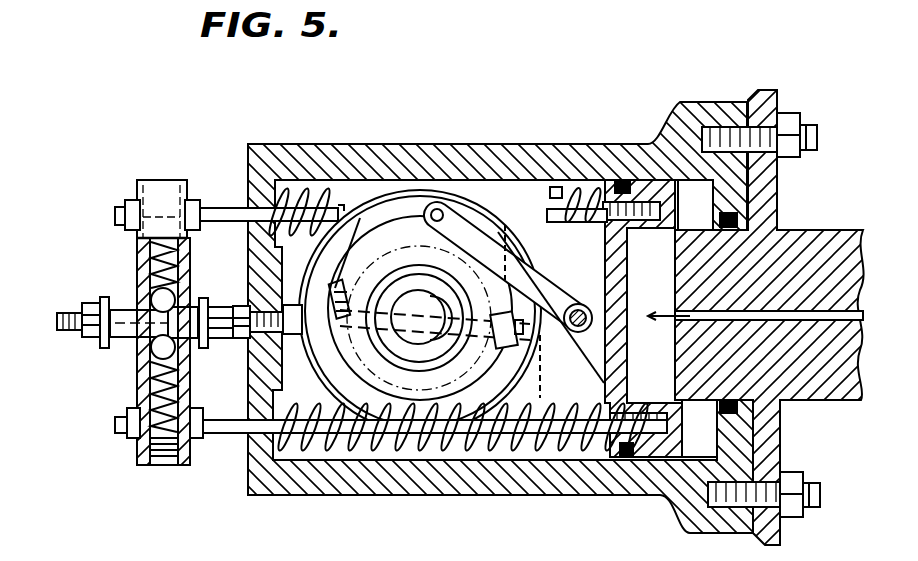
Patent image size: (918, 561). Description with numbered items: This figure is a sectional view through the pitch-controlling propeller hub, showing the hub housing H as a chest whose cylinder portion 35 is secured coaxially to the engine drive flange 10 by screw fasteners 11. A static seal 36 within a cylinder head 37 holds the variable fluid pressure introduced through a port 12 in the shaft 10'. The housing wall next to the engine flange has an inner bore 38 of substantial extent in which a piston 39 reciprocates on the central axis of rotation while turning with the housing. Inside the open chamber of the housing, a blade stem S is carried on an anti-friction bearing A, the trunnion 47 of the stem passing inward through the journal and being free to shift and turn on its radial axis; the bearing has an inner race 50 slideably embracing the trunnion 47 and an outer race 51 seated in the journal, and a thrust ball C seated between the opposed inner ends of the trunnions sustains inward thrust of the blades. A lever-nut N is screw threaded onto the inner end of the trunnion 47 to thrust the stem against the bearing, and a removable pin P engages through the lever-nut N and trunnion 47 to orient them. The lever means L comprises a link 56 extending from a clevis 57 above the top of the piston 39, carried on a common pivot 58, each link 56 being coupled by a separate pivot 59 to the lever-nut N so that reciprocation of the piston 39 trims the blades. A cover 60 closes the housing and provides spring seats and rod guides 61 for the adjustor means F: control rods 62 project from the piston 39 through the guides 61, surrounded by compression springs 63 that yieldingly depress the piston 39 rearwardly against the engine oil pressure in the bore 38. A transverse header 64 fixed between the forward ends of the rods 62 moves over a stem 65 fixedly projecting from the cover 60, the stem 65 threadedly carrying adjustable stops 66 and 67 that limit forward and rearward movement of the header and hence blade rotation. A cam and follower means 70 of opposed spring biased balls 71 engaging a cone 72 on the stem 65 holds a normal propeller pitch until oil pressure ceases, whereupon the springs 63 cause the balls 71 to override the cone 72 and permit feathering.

The drive flange 10 is at (769, 317).
The shaft 10' is at (804, 472).
The screw fasteners 11 is at (777, 114).
The port 12 is at (782, 321).
The cylinder portion 35 is at (562, 172).
The static seal 36 is at (738, 222).
The cylinder head 37 is at (740, 442).
The bore 38 is at (562, 470).
The piston 39 is at (656, 460).
The trunnion 47 is at (444, 257).
The inner race 50 is at (528, 350).
The outer race 51 is at (525, 377).
The link 56 is at (492, 234).
The clevis 57 is at (600, 345).
The common pivot 58 is at (590, 309).
The pivot 59 is at (437, 211).
The cover 60 is at (262, 456).
The rod guides 61 is at (247, 213).
The control rods 62 is at (547, 216).
The compression springs 63 is at (326, 196).
The transverse header 64 is at (140, 240).
The stem 65 is at (68, 312).
The stop 66 is at (92, 302).
The stop 67 is at (210, 304).
The cam and follower means 70 is at (126, 345).
The spring biased balls 71 is at (156, 292).
The cone 72 is at (178, 298).
The hub housing H is at (490, 143).
The removable pin P is at (648, 176).
The lever means L is at (560, 278).
The lever-nut N is at (420, 303).
The stem S is at (410, 268).
The thrust ball C is at (440, 306).
The anti-friction bearings A is at (420, 311).
The adjustor means F is at (100, 389).